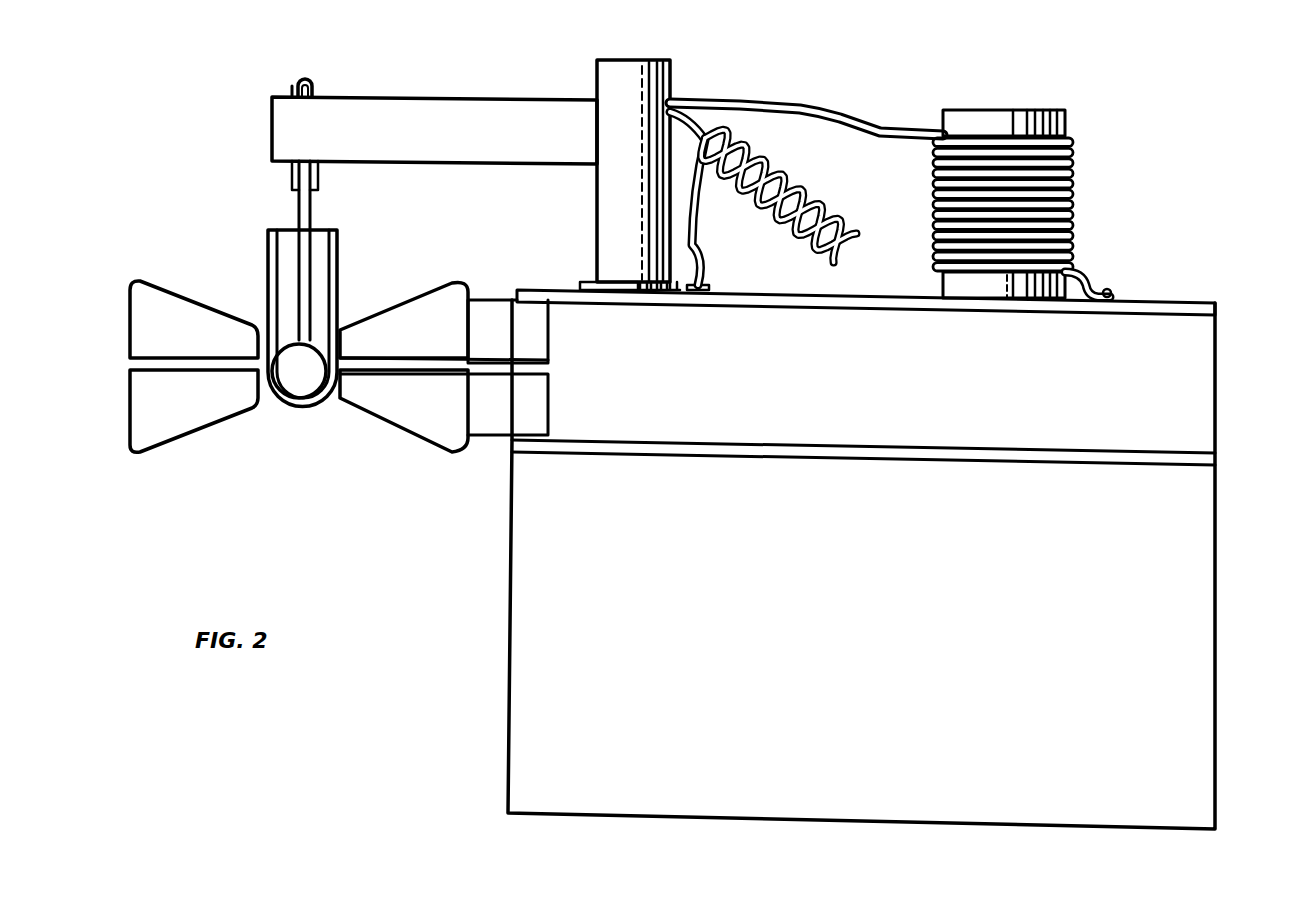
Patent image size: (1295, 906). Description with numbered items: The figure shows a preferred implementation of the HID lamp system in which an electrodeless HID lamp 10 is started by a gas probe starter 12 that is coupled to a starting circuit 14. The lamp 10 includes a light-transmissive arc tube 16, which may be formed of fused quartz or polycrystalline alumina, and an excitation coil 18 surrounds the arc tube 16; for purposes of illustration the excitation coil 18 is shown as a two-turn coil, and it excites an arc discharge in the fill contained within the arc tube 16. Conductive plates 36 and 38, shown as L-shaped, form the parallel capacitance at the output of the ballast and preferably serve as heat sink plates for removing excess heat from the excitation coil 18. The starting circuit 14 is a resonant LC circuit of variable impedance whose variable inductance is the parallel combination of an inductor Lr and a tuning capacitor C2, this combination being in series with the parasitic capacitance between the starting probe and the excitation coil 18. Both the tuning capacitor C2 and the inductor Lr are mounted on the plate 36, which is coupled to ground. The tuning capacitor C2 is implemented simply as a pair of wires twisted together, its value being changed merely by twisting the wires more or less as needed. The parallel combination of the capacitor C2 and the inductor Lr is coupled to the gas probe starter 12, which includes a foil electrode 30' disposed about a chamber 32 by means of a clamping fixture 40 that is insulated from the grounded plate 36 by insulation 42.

The electrodeless HID lamp 10 is at (298, 404).
The gas probe starter 12 is at (228, 103).
The starting circuit 14 is at (815, 56).
The arc tube 16 is at (318, 398).
The excitation coil 18 is at (206, 298).
The foil electrode 30' is at (334, 64).
The chamber 32 is at (297, 204).
The conductive plate 36 is at (1217, 306).
The conductive plate 38 is at (1213, 455).
The clamping fixture 40 is at (516, 96).
The insulation 42 is at (585, 280).
The tuning capacitor C2 is at (800, 184).
The inductor Lr is at (1083, 187).